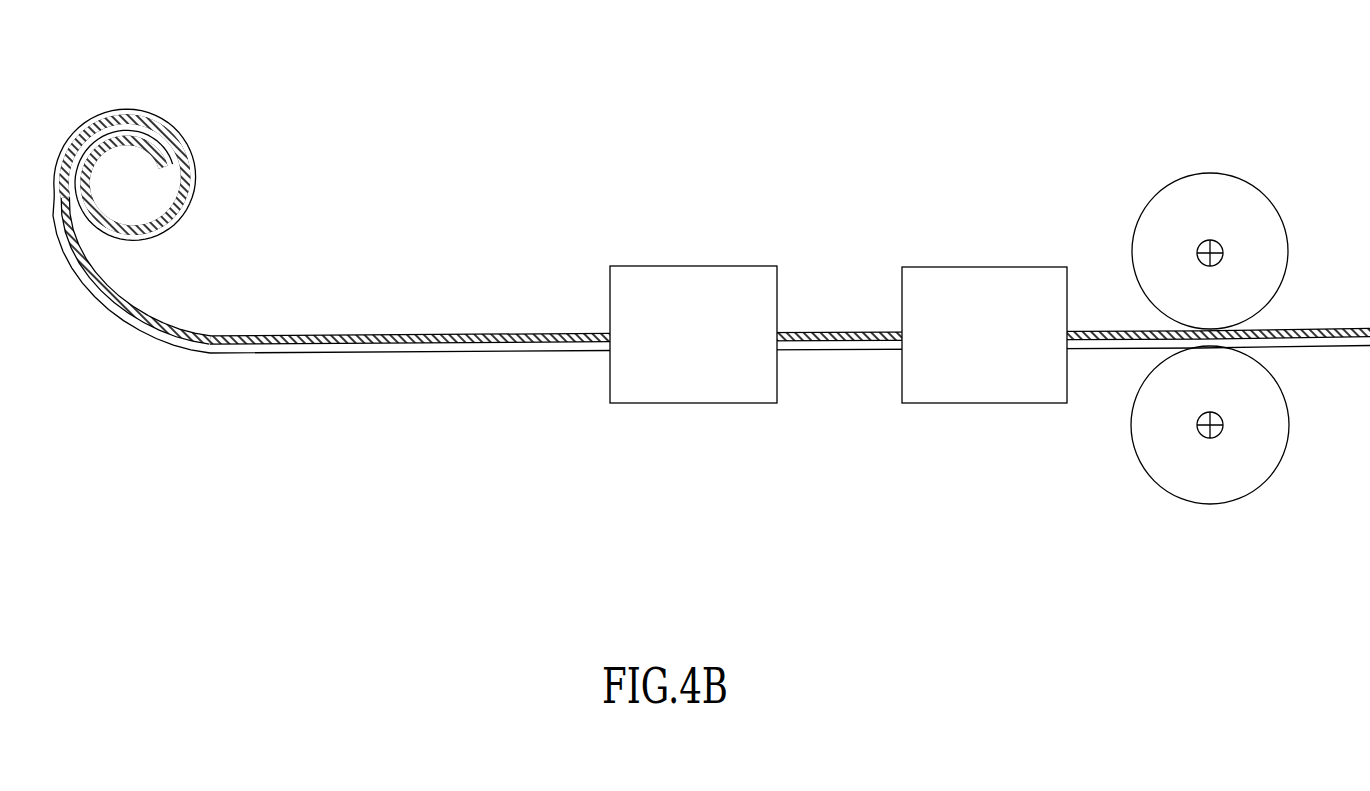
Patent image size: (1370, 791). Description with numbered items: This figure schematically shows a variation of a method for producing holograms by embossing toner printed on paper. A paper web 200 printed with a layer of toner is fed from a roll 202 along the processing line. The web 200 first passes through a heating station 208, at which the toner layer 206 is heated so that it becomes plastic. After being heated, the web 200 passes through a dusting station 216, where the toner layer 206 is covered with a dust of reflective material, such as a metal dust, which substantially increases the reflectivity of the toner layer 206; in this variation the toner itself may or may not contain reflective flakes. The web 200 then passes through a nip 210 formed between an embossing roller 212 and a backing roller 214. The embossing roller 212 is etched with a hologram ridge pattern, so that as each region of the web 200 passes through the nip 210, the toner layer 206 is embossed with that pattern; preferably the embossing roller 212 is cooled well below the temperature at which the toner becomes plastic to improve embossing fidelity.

The paper web 200 is at (168, 300).
The roll 202 is at (139, 59).
The toner layer 206 is at (412, 338).
The heating station 208 is at (692, 268).
The nip 210 is at (1150, 360).
The embossing roller 212 is at (1222, 181).
The backing roller 214 is at (1257, 466).
The dusting station 216 is at (986, 268).